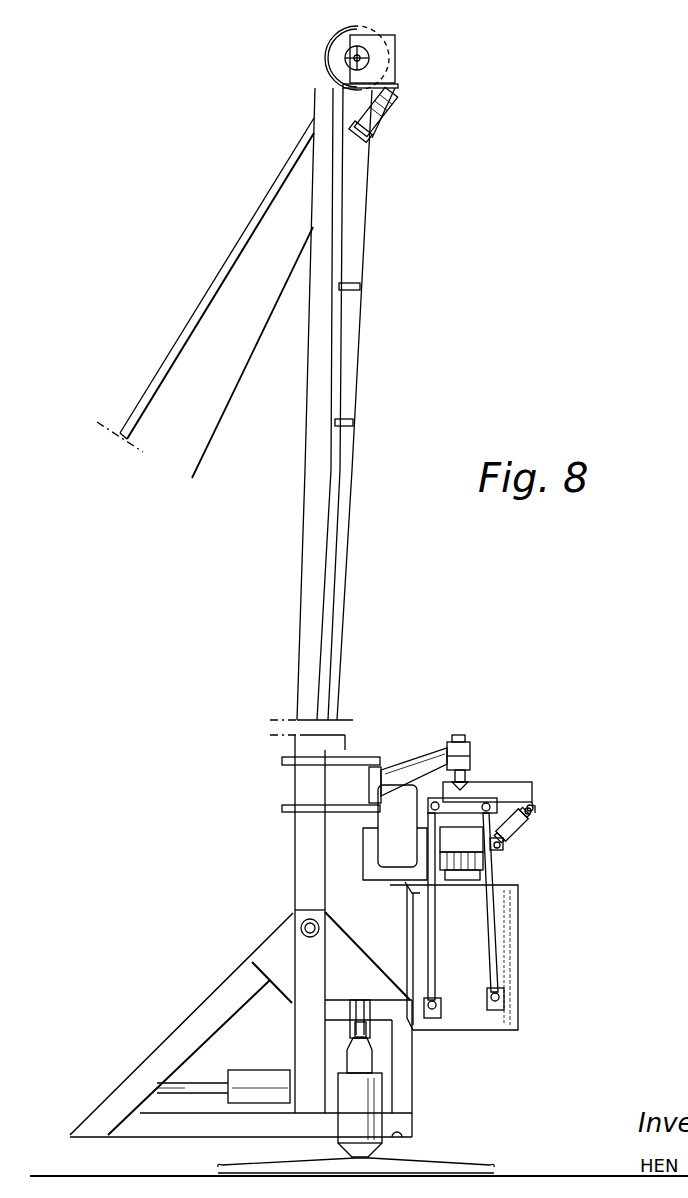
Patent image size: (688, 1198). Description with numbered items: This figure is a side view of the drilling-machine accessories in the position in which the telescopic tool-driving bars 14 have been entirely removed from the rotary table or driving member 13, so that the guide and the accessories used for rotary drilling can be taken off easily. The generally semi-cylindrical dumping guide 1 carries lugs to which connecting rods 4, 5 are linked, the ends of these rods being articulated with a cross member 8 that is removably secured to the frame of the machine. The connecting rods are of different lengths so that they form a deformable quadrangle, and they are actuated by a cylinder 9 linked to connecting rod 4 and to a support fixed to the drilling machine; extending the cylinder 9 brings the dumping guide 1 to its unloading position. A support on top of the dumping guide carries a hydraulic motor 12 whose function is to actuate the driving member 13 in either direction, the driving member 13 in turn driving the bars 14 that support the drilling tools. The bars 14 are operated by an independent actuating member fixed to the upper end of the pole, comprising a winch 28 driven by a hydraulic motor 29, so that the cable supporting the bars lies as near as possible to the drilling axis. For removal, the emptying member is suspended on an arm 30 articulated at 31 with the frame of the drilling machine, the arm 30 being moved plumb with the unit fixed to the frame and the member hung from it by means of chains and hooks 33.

The dumping guide 1 is at (520, 905).
The connecting rod 4 is at (491, 921).
The connecting rod 5 is at (440, 935).
The cross member 8 is at (480, 797).
The cylinder 9 is at (525, 829).
The hydraulic motor 12 is at (395, 839).
The driving member 13 is at (455, 850).
The tool-driving bars 14 is at (341, 566).
The winch 28 is at (360, 31).
The hydraulic motor 29 is at (392, 116).
The arm 30 is at (398, 770).
The articulation 31 is at (338, 765).
The chains and hooks 33 is at (468, 784).